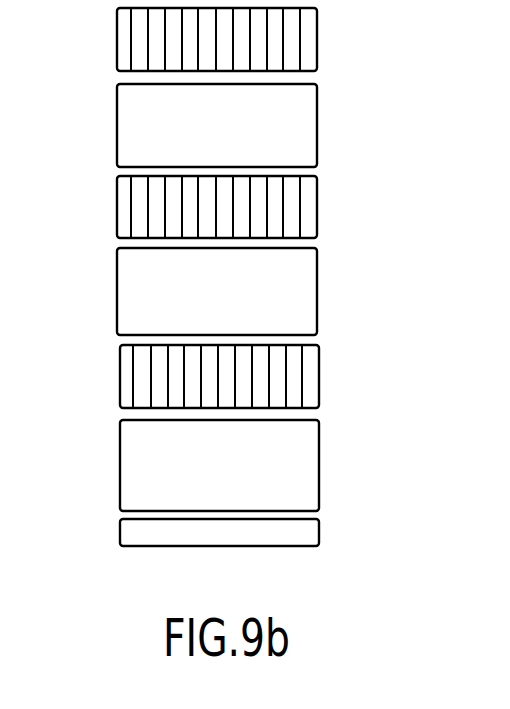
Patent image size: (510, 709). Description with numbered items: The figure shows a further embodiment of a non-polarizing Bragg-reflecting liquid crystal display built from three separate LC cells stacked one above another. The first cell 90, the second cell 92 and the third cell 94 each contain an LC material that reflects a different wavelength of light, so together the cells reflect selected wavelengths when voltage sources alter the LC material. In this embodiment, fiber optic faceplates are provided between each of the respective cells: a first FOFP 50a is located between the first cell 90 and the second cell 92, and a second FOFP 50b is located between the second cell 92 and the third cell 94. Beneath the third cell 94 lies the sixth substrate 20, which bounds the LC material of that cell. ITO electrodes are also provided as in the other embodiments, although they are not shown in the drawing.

The first LC cell 90 is at (108, 82).
The second LC cell 92 is at (108, 246).
The third LC cell 94 is at (108, 420).
The FOFP 50a is at (318, 210).
The FOFP 50b is at (320, 380).
The sixth substrate 20 is at (320, 533).